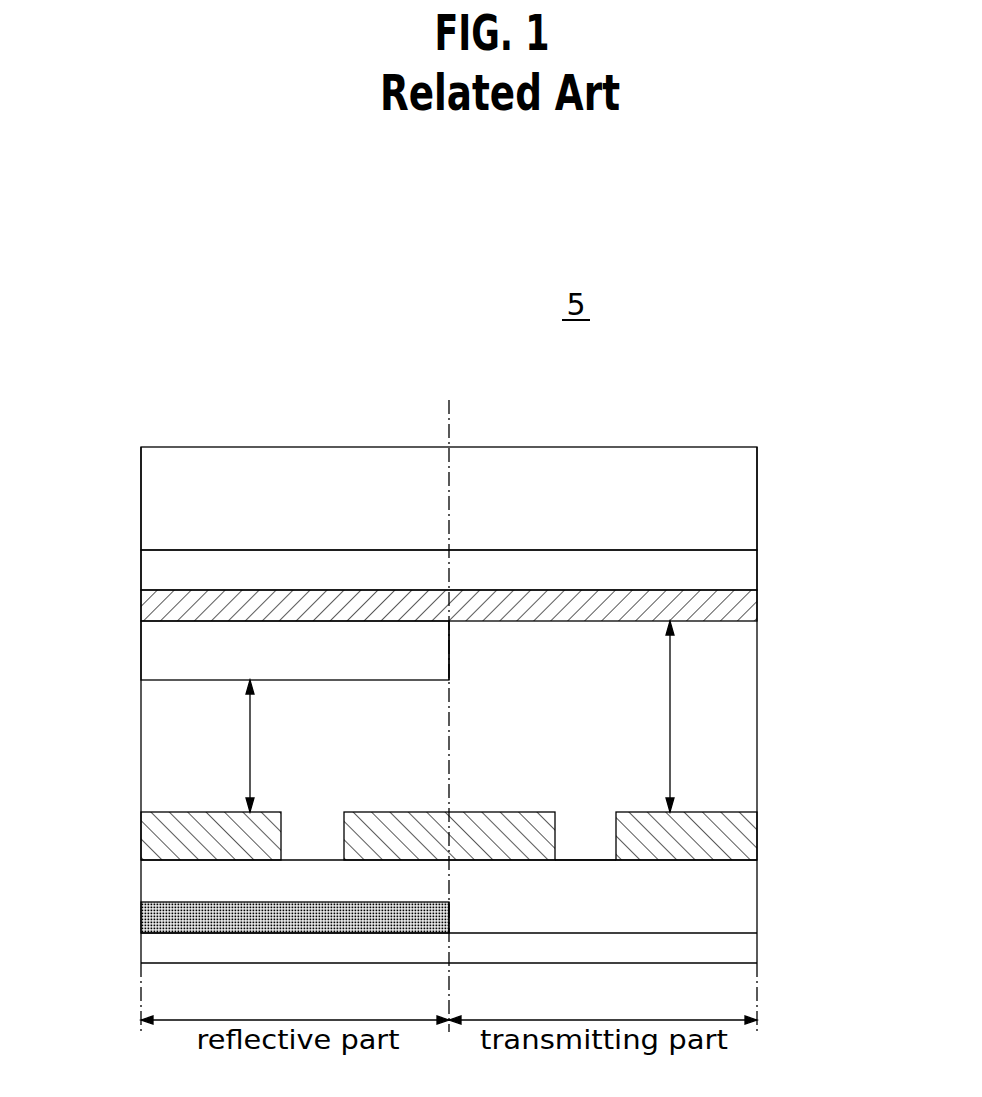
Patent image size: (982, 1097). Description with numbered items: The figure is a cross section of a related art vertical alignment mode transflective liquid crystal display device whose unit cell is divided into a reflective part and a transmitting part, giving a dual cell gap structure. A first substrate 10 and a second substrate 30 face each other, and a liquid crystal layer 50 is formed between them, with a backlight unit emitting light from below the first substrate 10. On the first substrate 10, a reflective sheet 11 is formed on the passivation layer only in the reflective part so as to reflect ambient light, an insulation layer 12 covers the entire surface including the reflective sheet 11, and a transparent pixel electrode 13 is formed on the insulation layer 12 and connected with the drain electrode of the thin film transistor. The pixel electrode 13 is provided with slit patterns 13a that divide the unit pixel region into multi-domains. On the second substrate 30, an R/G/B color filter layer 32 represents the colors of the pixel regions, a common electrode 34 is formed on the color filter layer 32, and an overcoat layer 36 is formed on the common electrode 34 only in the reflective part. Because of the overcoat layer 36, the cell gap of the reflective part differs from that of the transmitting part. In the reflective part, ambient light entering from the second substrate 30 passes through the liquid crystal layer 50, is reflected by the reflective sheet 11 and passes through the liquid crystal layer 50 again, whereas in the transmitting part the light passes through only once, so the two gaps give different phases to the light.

The second substrate 30 is at (748, 495).
The R/G/B color filter layer 32 is at (748, 569).
The common electrode 34 is at (752, 607).
The overcoat layer 36 is at (145, 648).
The liquid crystal layer 50 is at (748, 708).
The pixel electrode 13 is at (750, 837).
The slit patterns 13a is at (590, 828).
The insulation layer 12 is at (748, 896).
The reflective sheet 11 is at (145, 918).
The first substrate 10 is at (748, 948).